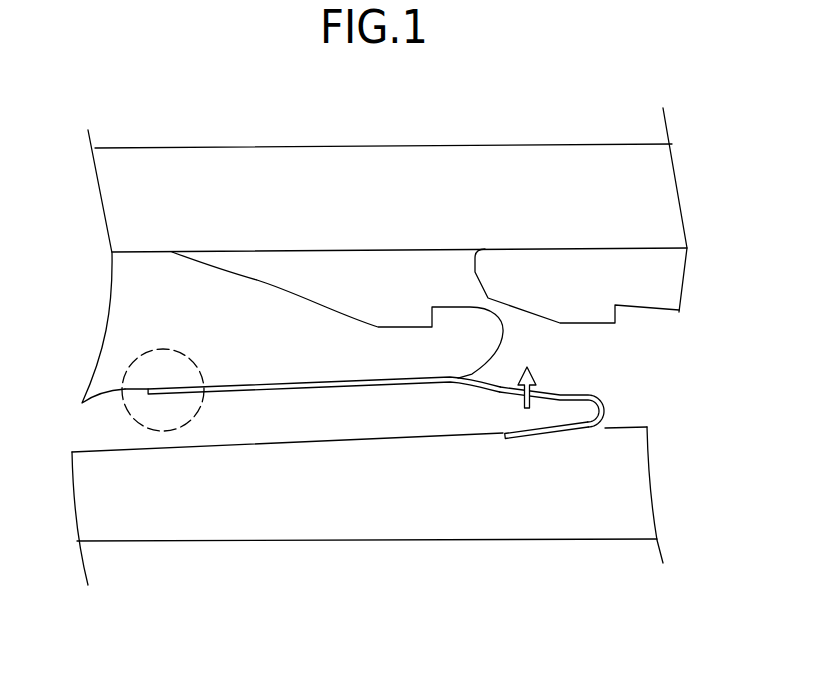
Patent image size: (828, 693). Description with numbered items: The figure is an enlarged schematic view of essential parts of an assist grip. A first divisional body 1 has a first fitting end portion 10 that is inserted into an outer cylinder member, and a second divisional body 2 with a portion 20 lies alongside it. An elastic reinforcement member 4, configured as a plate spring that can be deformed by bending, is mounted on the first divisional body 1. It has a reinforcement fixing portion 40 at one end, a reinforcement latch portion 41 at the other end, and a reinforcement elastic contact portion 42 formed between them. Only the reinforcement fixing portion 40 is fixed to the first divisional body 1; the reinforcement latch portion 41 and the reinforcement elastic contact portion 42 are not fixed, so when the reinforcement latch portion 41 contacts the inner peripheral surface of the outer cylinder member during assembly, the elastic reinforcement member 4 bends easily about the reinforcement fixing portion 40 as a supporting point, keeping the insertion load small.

The first divisional body 1 is at (135, 265).
The first fitting end portion 10 is at (157, 265).
The second divisional body 2 is at (632, 257).
The engaging projection 20 is at (605, 258).
The elastic reinforcement member 4 is at (364, 502).
The reinforcement fixing portion 40 is at (166, 392).
The reinforcement latch portion 41 is at (550, 432).
The reinforcement elastic contact portion 42 is at (433, 388).